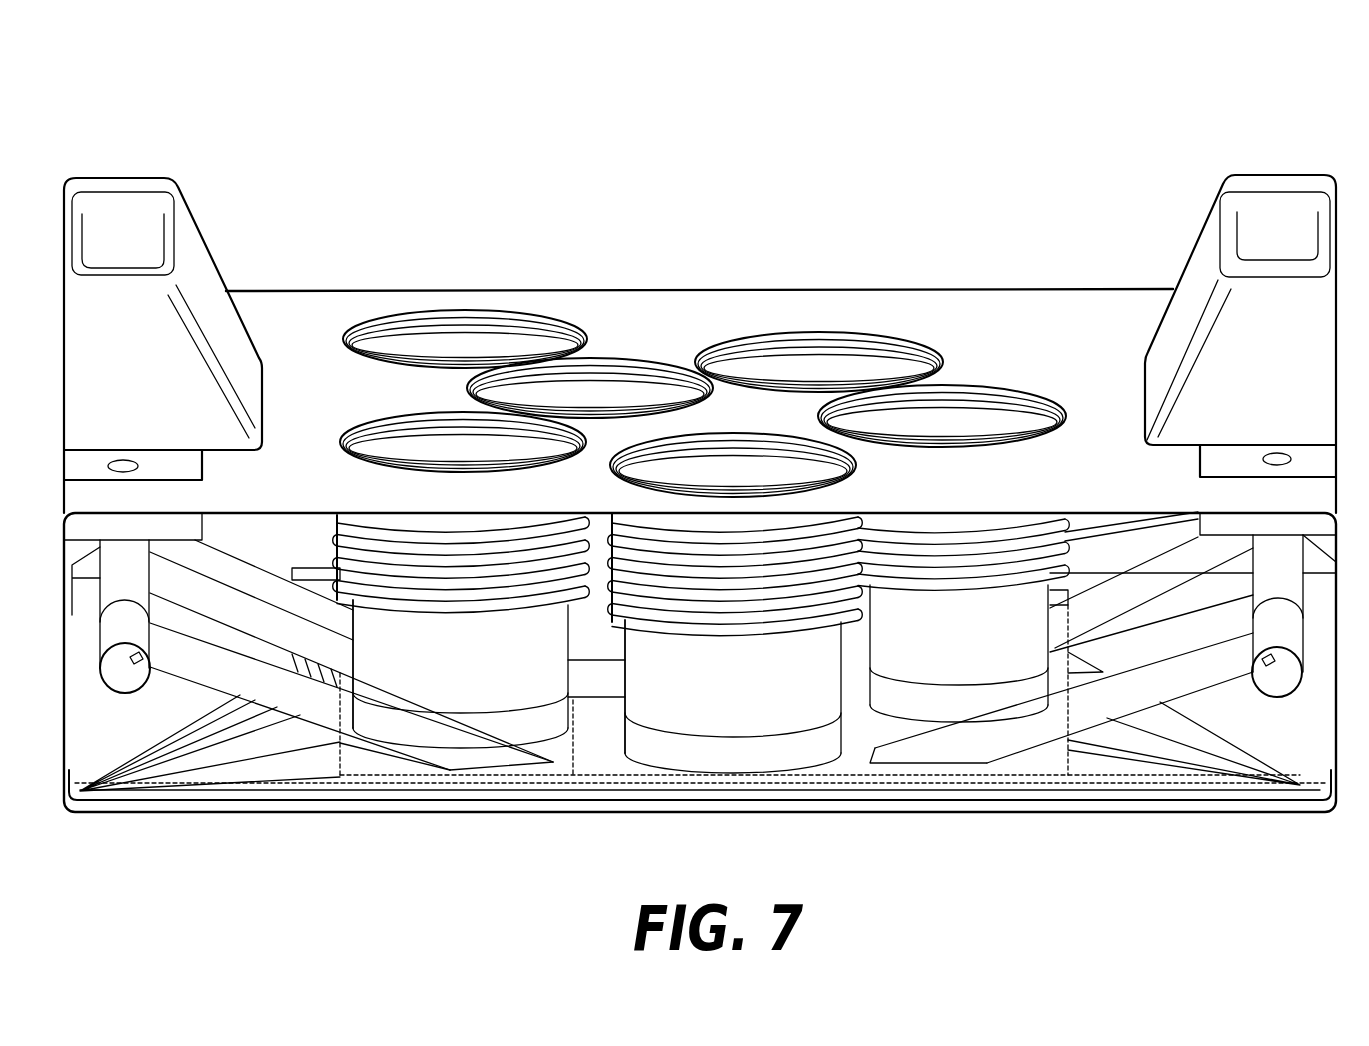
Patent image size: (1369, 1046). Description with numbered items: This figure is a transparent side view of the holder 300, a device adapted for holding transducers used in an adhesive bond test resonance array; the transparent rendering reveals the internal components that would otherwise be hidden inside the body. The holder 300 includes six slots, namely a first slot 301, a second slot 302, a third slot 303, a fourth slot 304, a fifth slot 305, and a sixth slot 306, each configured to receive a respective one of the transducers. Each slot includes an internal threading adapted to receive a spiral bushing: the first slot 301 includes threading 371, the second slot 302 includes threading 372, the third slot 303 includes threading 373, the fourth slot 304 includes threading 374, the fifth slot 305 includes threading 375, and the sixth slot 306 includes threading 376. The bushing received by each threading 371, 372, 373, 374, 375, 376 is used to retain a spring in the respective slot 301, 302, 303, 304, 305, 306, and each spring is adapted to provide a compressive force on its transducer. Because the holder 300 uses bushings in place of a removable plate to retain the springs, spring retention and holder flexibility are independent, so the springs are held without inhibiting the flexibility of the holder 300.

The holder 300 is at (282, 119).
The first slot 301 is at (460, 278).
The second slot 302 is at (591, 315).
The third slot 303 is at (819, 296).
The fourth slot 304 is at (956, 333).
The fifth slot 305 is at (788, 700).
The sixth slot 306 is at (480, 674).
The threading 371 is at (417, 345).
The threading 372 is at (612, 400).
The threading 373 is at (835, 372).
The threading 374 is at (980, 367).
The threading 375 is at (757, 473).
The threading 376 is at (393, 448).